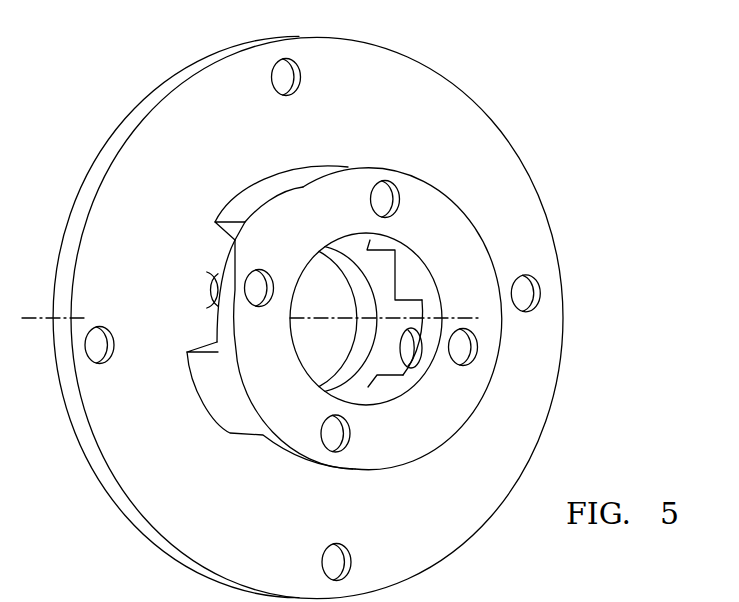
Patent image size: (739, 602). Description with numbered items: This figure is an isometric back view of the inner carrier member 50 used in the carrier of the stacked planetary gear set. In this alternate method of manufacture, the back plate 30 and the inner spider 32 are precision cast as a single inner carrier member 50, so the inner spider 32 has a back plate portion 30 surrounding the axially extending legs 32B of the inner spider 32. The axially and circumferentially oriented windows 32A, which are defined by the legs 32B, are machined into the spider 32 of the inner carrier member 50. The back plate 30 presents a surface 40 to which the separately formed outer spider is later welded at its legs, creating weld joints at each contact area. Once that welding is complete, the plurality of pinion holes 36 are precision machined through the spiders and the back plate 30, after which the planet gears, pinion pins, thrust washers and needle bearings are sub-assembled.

The back plate 30 is at (515, 183).
The inner spider 32 is at (474, 262).
The windows 32A is at (212, 258).
The legs 32B is at (217, 393).
The pinion holes 36 is at (272, 79).
The surface 40 is at (416, 104).
The inner carrier member 50 is at (558, 124).